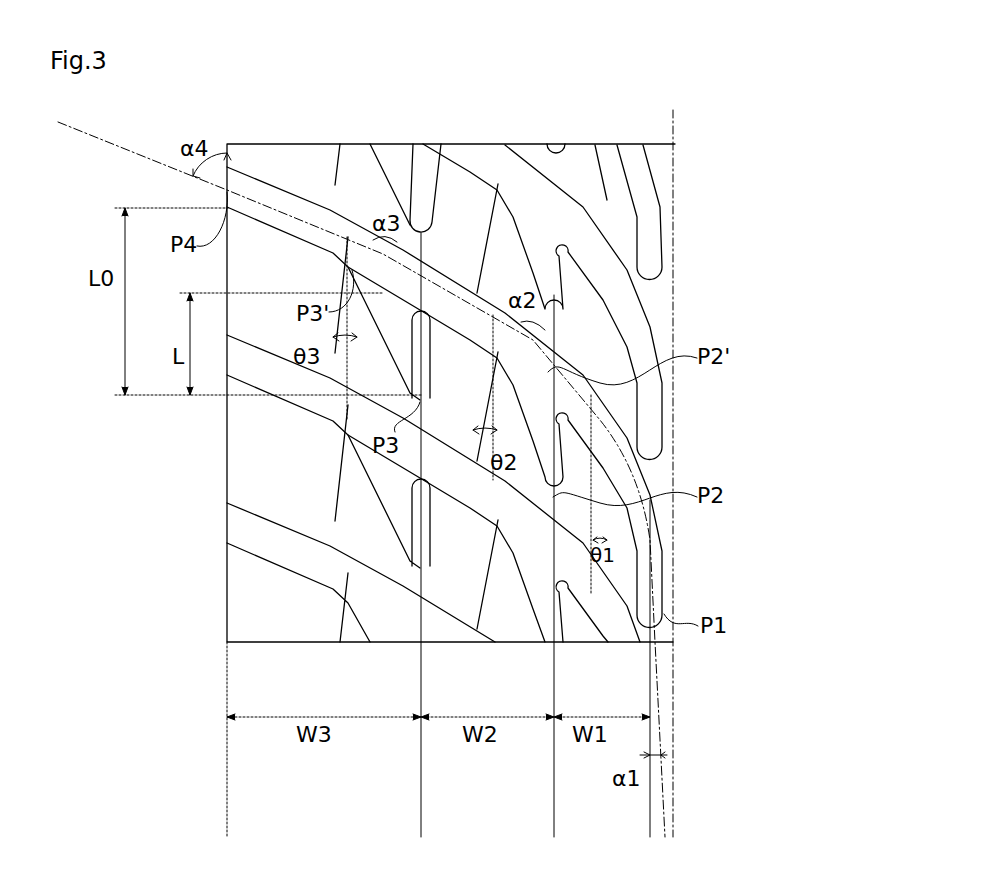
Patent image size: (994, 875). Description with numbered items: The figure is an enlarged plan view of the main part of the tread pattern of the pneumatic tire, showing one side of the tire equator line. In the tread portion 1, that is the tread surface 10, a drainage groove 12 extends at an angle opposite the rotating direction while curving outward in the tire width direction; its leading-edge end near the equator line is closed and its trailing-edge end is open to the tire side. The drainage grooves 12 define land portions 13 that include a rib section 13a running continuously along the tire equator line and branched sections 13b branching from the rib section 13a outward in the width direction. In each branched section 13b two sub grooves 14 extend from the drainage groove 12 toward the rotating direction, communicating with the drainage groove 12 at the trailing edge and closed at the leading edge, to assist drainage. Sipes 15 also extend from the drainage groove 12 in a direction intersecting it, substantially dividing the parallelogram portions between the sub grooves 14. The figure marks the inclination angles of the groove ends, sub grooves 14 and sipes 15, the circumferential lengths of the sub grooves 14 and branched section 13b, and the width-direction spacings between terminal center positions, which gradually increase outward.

The tread portion 1 is at (456, 455).
The tread surface 10 is at (540, 142).
The drainage groove 12 is at (286, 195).
The land portion 13 is at (597, 176).
The rib section 13a is at (664, 165).
The branched section 13b is at (440, 200).
The sub groove 14 is at (415, 567).
The sipe 15 is at (337, 500).